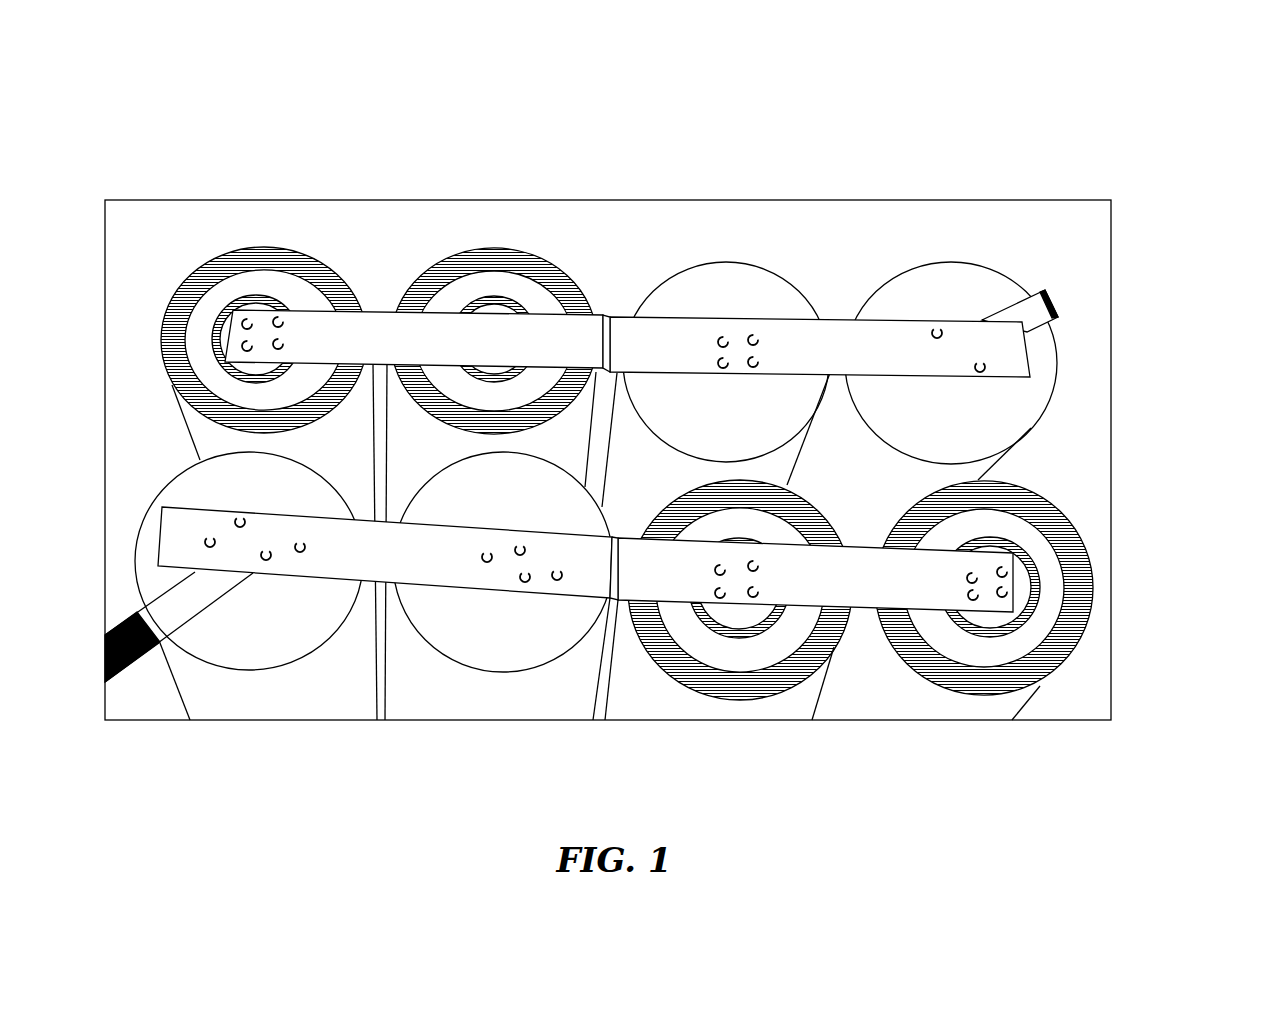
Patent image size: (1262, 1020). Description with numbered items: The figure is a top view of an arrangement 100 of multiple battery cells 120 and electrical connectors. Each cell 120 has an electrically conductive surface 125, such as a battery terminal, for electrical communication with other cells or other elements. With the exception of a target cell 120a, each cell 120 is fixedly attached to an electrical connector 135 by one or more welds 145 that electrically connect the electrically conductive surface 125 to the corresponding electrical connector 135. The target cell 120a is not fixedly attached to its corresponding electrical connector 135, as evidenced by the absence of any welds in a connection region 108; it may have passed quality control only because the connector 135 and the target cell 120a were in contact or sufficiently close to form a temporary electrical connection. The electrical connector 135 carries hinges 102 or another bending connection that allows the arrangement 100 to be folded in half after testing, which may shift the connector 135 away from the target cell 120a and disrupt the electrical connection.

The arrangement 100 is at (848, 212).
The hinges 102 is at (610, 317).
The connection region 108 is at (497, 355).
The battery cells 120 is at (787, 282).
The target cell 120a is at (550, 262).
The electrically conductive surface 125 is at (730, 617).
The electrical connector 135 is at (387, 311).
The welds 145 is at (262, 327).